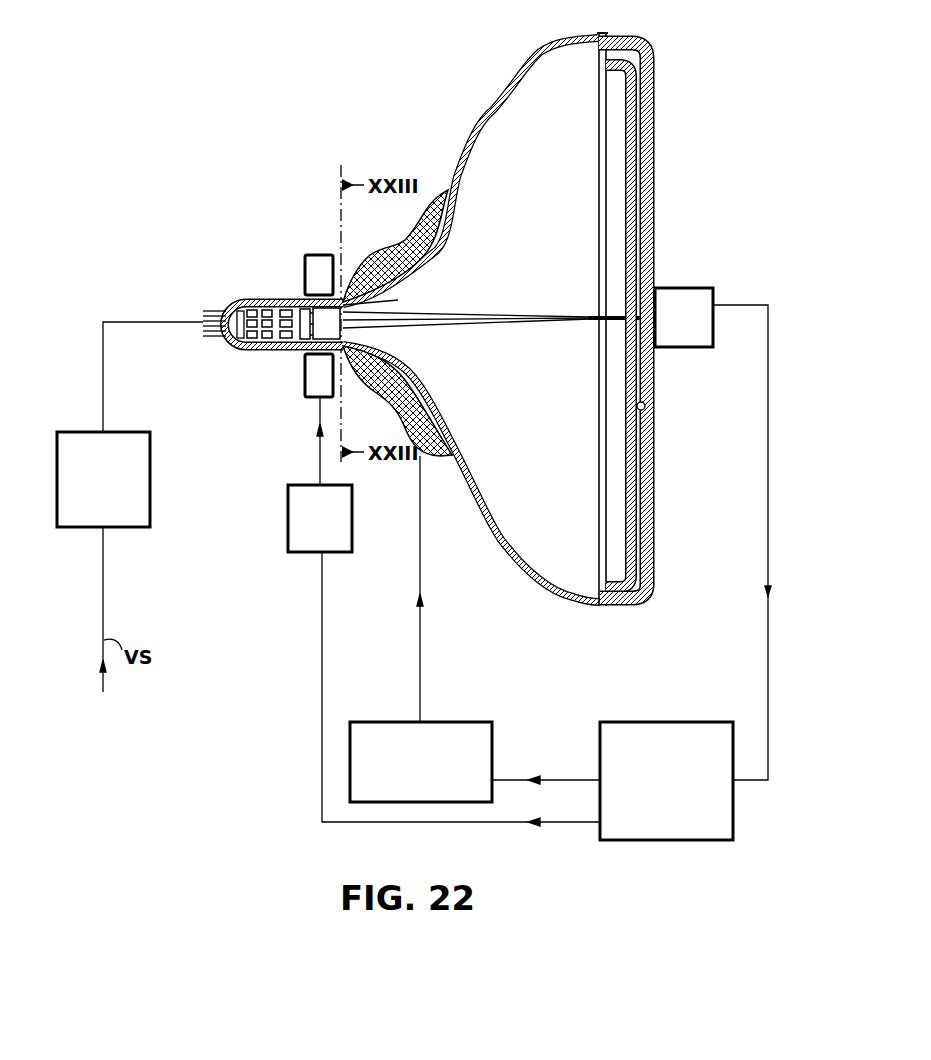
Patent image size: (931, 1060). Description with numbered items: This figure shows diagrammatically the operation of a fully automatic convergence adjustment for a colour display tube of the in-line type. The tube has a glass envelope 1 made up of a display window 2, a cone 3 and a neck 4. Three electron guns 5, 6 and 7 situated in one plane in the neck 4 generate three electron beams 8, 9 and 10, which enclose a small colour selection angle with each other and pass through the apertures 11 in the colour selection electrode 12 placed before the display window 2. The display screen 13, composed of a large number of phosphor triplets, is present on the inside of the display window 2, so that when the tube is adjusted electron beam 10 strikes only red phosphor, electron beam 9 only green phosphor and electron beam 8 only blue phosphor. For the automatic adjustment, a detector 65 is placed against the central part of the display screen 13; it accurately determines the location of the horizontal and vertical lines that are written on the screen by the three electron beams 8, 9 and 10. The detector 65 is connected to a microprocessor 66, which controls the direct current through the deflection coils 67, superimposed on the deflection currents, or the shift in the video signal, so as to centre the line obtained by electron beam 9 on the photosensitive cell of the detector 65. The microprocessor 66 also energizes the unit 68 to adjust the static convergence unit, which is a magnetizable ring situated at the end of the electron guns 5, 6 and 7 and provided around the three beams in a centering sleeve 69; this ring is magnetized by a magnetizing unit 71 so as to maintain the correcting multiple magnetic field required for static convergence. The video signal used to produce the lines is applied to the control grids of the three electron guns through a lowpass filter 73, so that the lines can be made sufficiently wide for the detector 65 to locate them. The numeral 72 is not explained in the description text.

The glass envelope 1 is at (516, 564).
The display window 2 is at (658, 497).
The cone 3 is at (491, 107).
The neck 4 is at (296, 342).
The electron gun 5 is at (285, 310).
The electron gun 6 is at (246, 320).
The electron gun 7 is at (280, 342).
The electron beam 8 is at (433, 311).
The electron beam 9 is at (460, 318).
The electron beam 10 is at (470, 327).
The apertures 11 is at (626, 252).
The colour selection electrode 12 is at (626, 398).
The display screen 13 is at (648, 408).
The detector 65 is at (688, 300).
The microprocessor 66 is at (710, 726).
The deflection coils 67 is at (440, 198).
The unit 68 is at (292, 544).
The centering sleeve 69 is at (384, 301).
The magnetizing unit 71 is at (320, 262).
The current source (AC/DC) 72 is at (476, 731).
The lowpass filter 73 is at (126, 514).